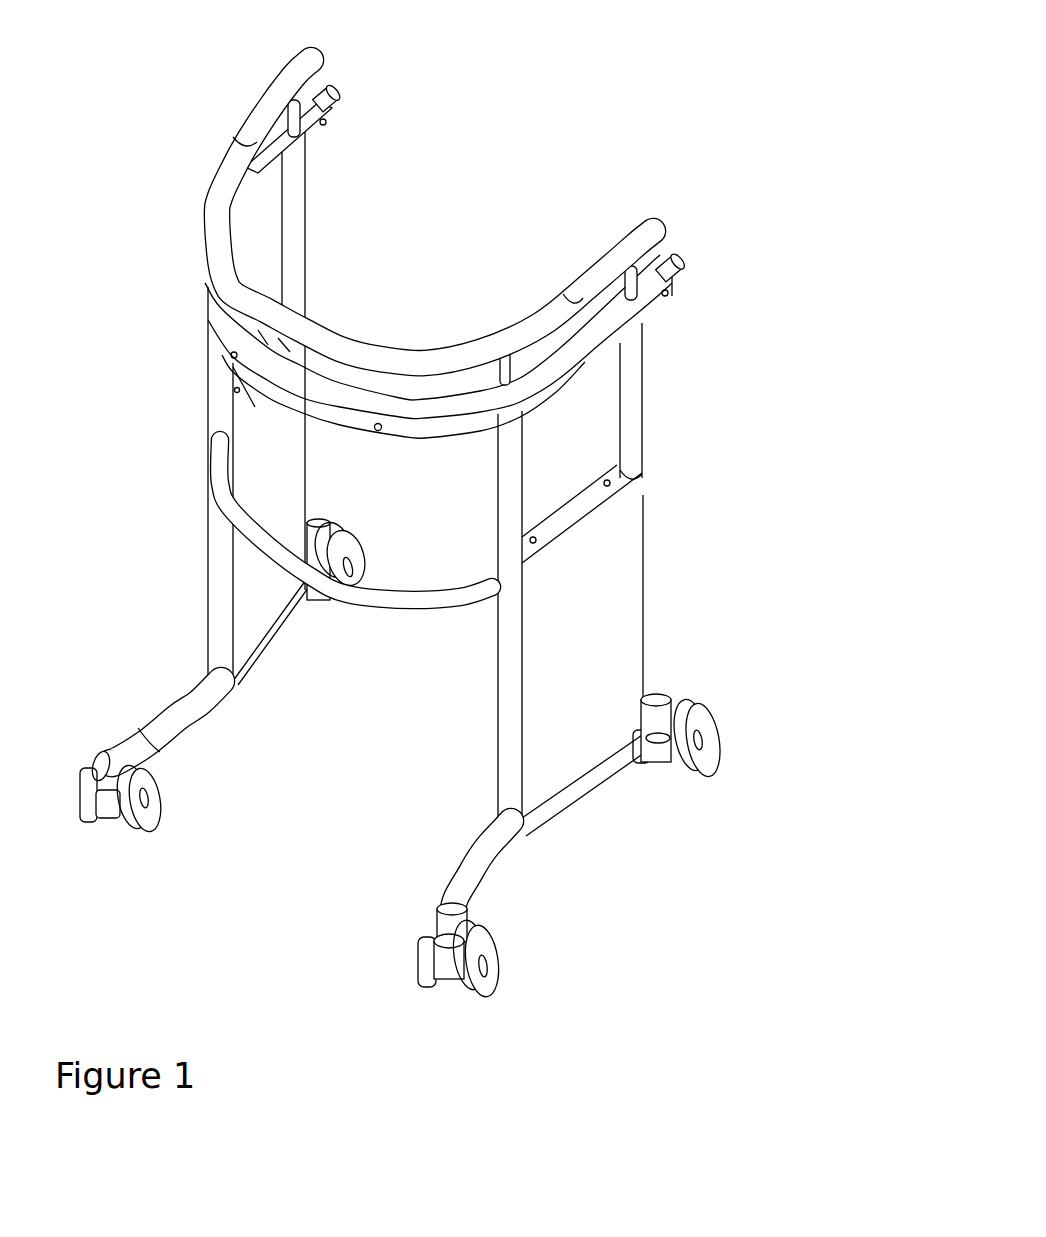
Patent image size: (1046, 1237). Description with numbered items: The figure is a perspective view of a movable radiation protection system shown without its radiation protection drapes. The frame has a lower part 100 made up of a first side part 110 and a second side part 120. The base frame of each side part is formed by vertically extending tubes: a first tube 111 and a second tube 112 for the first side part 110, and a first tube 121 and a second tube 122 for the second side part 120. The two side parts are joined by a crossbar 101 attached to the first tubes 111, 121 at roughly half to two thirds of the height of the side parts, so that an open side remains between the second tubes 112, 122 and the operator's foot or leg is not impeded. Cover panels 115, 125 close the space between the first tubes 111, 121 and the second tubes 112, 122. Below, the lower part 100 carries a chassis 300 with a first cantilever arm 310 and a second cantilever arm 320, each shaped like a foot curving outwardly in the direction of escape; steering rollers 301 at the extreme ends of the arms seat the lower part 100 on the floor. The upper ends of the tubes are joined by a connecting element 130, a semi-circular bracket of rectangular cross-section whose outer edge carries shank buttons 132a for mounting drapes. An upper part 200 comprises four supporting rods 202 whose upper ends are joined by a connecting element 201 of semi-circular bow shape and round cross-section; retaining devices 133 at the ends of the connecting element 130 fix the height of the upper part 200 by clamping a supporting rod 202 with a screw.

The lower part 100 is at (482, 462).
The crossbar 101 is at (413, 603).
The first side part 110 is at (260, 392).
The first tube 111 is at (217, 383).
The second tube 112 is at (298, 278).
The cover panel 115 is at (265, 465).
The second side part 120 is at (629, 563).
The first tube 121 is at (510, 498).
The second tube 122 is at (632, 363).
The cover panel 125 is at (607, 618).
The connecting element 130 is at (430, 430).
The shank button 132a is at (378, 433).
The retaining device 133 is at (342, 104).
The upper part 200 is at (461, 212).
The connecting element 201 is at (383, 362).
The supporting rod 202 is at (327, 98).
The chassis 300 is at (402, 791).
The steering roller 301 is at (323, 597).
The first cantilever arm 310 is at (183, 733).
The second cantilever arm 320 is at (488, 848).